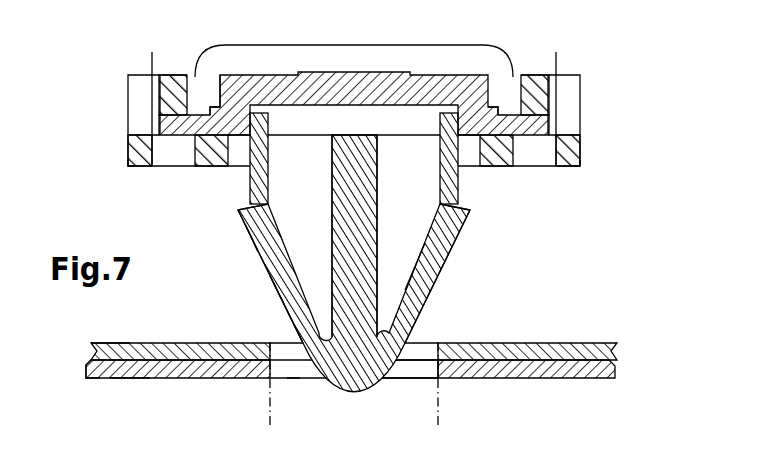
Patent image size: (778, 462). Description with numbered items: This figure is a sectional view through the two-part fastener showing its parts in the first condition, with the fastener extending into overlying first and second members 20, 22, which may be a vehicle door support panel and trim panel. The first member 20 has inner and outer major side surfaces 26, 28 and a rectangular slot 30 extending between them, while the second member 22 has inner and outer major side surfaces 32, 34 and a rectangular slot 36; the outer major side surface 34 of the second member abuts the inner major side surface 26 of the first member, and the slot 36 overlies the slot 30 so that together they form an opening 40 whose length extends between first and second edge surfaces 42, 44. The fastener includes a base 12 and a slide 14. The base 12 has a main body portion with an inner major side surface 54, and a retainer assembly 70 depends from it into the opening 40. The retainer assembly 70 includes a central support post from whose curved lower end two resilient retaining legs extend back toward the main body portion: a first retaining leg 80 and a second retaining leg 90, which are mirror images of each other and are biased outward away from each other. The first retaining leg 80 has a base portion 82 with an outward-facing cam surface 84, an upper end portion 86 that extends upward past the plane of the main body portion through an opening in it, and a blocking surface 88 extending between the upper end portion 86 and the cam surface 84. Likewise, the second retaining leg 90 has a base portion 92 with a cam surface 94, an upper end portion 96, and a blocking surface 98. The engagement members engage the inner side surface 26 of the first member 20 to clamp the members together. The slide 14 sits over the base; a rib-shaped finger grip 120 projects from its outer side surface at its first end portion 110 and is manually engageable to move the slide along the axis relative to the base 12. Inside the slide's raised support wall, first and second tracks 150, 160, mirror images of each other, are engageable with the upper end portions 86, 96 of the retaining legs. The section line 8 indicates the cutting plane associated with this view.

The section line 8- 8 is at (353, 90).
The base 12 is at (322, 232).
The slide 14 is at (403, 196).
The first member 20 is at (374, 364).
The second member 22 is at (72, 380).
The inner major side surface 26 is at (594, 379).
The outer major side surface 28 is at (590, 343).
The rectangular slot 30 is at (420, 339).
The inner major side surface 32 is at (128, 378).
The outer major side surface 34 is at (122, 352).
The rectangular slot 36 is at (418, 370).
The opening 40 is at (120, 176).
The first edge surface 42 is at (280, 372).
The second edge surface 44 is at (432, 373).
The inner major side surface 54 is at (569, 168).
The retainer assembly 70 is at (387, 263).
The first retaining leg 80 is at (251, 268).
The base portion 82 is at (252, 238).
The cam surface 84 is at (287, 309).
The upper end portion 86 is at (262, 123).
The blocking surface 88 is at (239, 208).
The second retaining leg 90 is at (467, 253).
The base portion 92 is at (441, 237).
The cam surface 94 is at (420, 312).
The upper end portion 96 is at (447, 123).
The blocking surface 98 is at (470, 210).
The first end portion 110 is at (477, 45).
The finger grip 120 is at (354, 74).
The first track 150 is at (234, 116).
The second track 160 is at (499, 110).